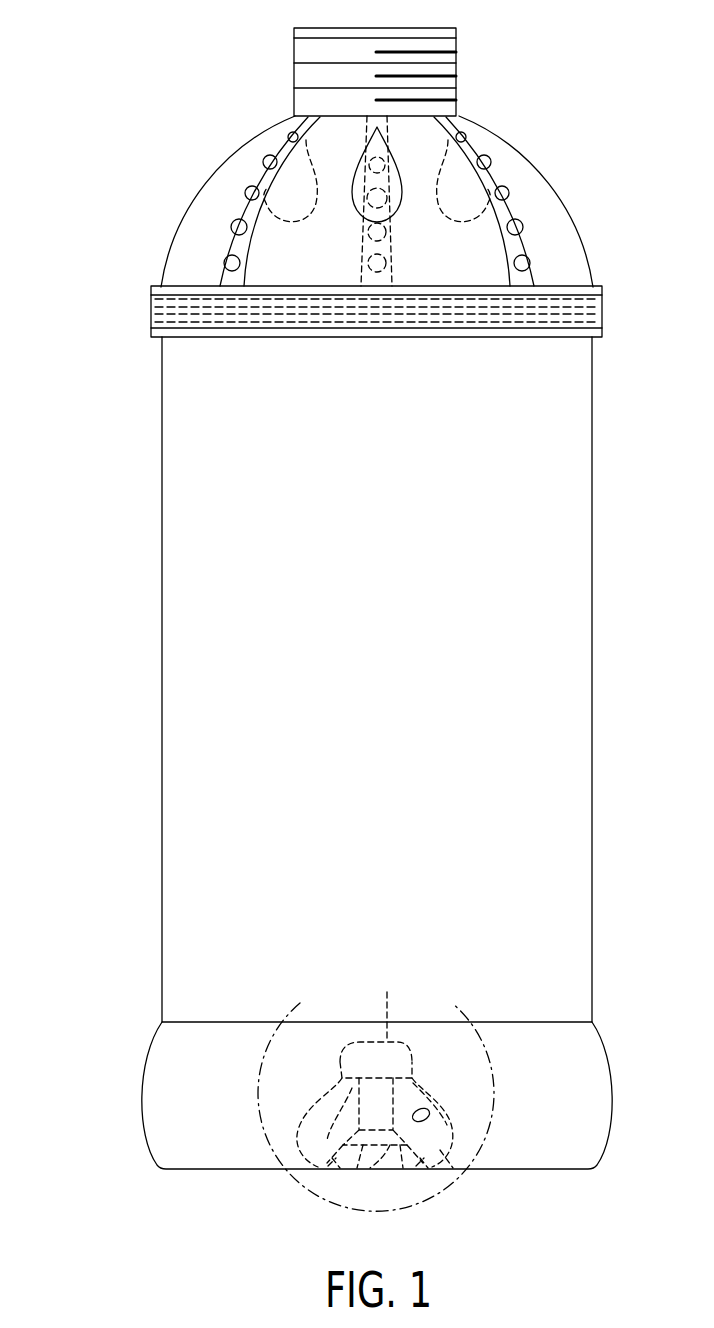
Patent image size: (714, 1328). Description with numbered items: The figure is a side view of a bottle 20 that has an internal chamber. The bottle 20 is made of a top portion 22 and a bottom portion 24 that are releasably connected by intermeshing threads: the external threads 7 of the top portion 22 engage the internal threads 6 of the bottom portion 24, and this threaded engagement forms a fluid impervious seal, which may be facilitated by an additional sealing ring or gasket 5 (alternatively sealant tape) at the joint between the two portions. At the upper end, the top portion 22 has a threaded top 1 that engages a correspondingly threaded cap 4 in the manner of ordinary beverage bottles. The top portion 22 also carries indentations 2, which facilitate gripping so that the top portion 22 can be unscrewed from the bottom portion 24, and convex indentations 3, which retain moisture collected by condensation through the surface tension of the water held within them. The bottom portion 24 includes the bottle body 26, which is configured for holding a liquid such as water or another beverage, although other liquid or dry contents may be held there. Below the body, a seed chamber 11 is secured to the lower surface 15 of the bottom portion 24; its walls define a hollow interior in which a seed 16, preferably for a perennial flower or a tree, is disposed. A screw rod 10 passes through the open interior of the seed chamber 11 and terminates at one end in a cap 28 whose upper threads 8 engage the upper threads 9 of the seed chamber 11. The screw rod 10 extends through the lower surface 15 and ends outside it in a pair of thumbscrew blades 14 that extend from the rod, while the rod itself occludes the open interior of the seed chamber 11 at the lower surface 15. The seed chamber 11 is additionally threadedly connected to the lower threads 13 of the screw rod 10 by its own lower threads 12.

The threaded top 1 is at (447, 50).
The indentations 2 is at (353, 168).
The convex indentations 3 is at (242, 250).
The threaded cap 4 is at (295, 72).
The sealing ring or gasket 5 is at (593, 288).
The internal threads 6 is at (172, 322).
The external threads 7 is at (160, 308).
The upper threads 8 is at (350, 1057).
The upper threads 9 is at (410, 1058).
The screw rod 10 is at (368, 1100).
The seed chamber 11 is at (440, 1110).
The lower threads 12 is at (453, 1169).
The lower threads 13 is at (356, 1169).
The thumbscrew blades 14 is at (403, 1169).
The lower surface 15 is at (222, 1170).
The seed 16 is at (423, 1138).
The bottle 20 is at (133, 113).
The top portion 22 is at (195, 187).
The bottom portion 24 is at (133, 605).
The bottle body 26 is at (362, 815).
The cap 28 is at (388, 1002).